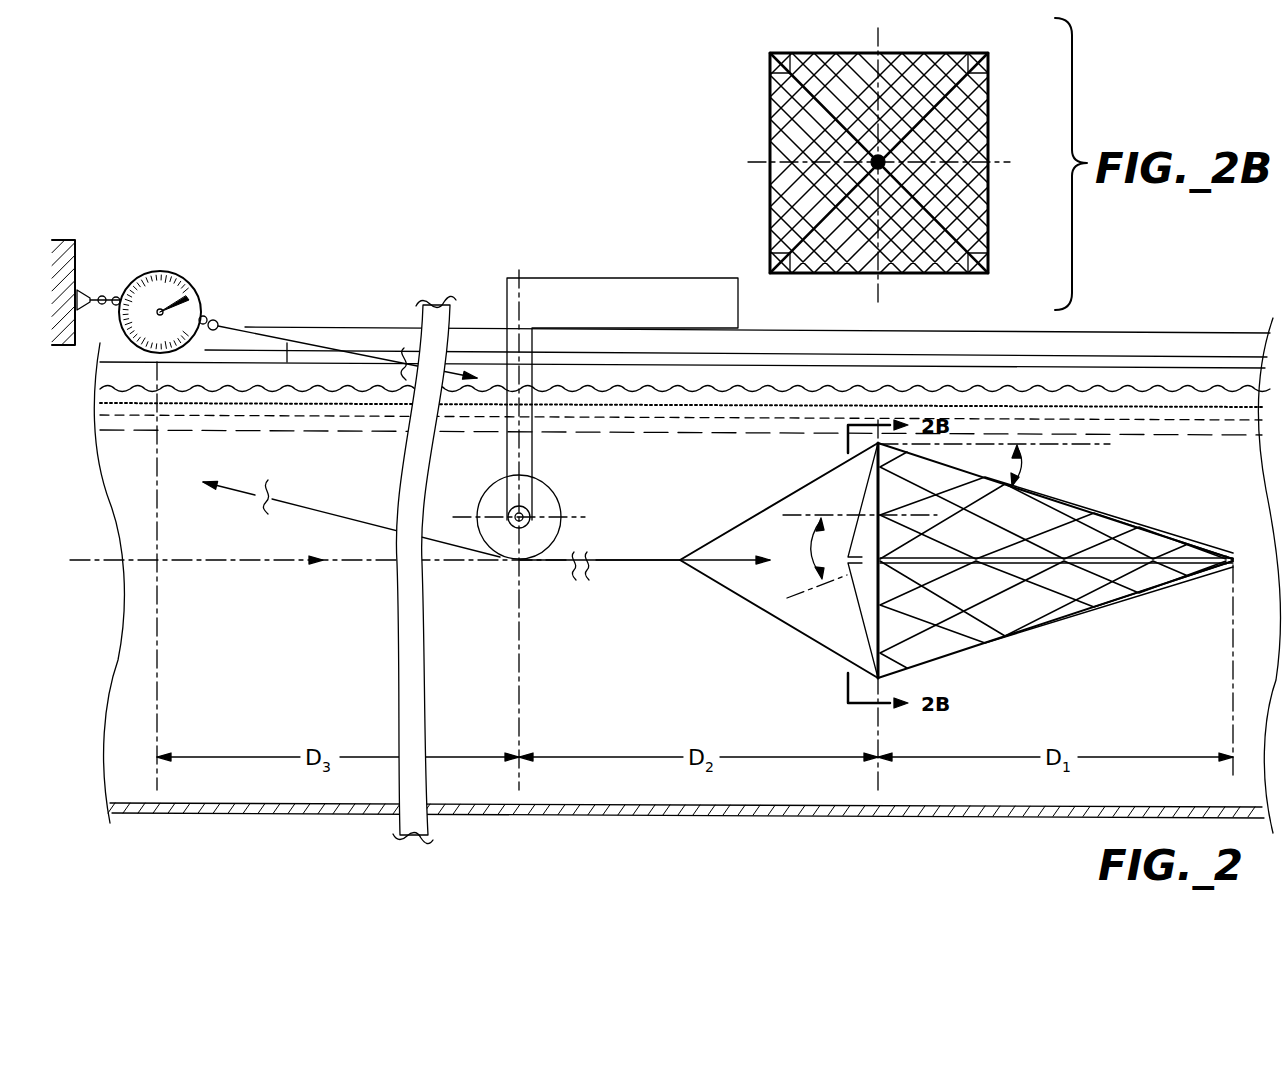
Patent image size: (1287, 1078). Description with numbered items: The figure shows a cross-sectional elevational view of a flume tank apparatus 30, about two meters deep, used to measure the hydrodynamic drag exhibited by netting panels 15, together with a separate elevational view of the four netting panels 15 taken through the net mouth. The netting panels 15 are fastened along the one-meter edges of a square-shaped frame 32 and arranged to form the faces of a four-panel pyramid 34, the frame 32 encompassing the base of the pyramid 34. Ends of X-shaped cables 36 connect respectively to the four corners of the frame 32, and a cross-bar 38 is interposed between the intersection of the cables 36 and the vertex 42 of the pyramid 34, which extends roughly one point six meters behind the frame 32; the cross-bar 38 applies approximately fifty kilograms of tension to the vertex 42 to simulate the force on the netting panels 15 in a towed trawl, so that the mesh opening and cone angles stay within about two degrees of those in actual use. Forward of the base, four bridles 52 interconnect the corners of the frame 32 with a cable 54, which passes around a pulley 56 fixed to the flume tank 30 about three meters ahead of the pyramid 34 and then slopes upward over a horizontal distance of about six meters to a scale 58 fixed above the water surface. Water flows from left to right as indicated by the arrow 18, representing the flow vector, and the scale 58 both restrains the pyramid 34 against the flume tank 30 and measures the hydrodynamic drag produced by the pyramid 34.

In FIG. 2, the netting panels 15 is at (1063, 500).
In FIG. 2B, the netting panels 15 is at (905, 53).
In FIG. 2, the arrow 18 is at (283, 562).
In FIG. 2, the flume tank apparatus 30 is at (905, 830).
In FIG. 2, the square-shaped frame 32 is at (872, 645).
In FIG. 2B, the square-shaped frame 32 is at (990, 100).
In FIG. 2, the pyramid 34 is at (1118, 521).
In FIG. 2B, the pyramid 34 is at (846, 193).
In FIG. 2, the X-shaped cables 36 is at (866, 478).
In FIG. 2B, the X-shaped cables 36 is at (857, 150).
In FIG. 2, the cross-bar 38 is at (1013, 565).
In FIG. 2B, the cross-bar 38 is at (876, 158).
In FIG. 2, the vertex 42 is at (1233, 552).
In FIG. 2, the bridles 52 is at (756, 516).
In FIG. 2, the cable 54 is at (335, 350).
In FIG. 2, the pulley 56 is at (548, 492).
In FIG. 2, the scale 58 is at (172, 272).